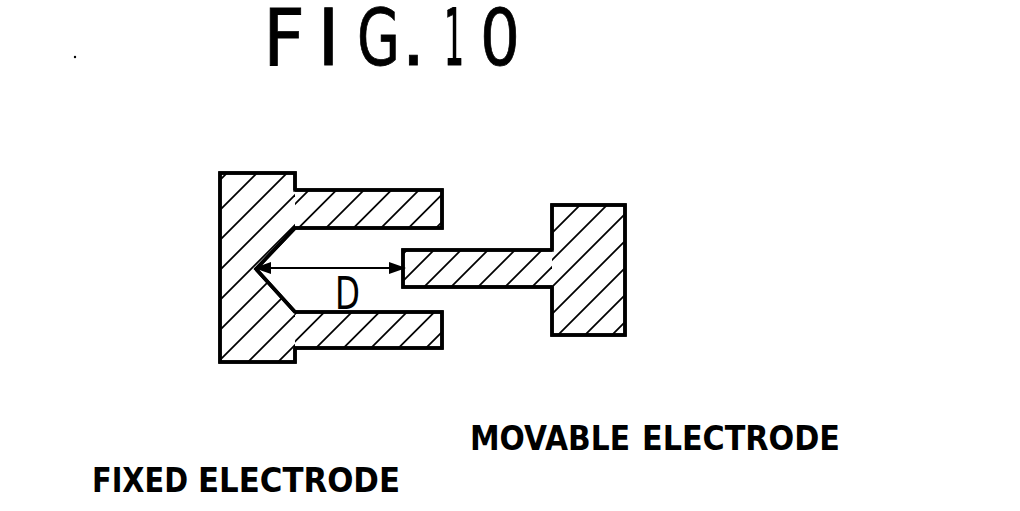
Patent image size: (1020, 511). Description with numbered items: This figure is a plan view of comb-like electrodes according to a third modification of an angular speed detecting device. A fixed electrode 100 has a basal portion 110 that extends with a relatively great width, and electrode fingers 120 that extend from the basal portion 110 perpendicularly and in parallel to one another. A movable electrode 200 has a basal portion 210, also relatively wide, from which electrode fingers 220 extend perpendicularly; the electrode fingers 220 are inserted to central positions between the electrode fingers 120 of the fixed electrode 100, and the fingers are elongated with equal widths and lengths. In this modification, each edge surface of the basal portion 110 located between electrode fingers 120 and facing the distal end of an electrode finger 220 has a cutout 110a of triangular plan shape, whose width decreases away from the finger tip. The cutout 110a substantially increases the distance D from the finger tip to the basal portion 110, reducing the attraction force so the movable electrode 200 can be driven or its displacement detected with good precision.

The fixed electrode 100 is at (263, 379).
The basal portion 110 is at (220, 256).
The cutout 110a is at (277, 249).
The electrode fingers 120 is at (343, 190).
The movable electrode 200 is at (530, 340).
The basal portion 210 is at (625, 279).
The electrode fingers 220 is at (475, 250).